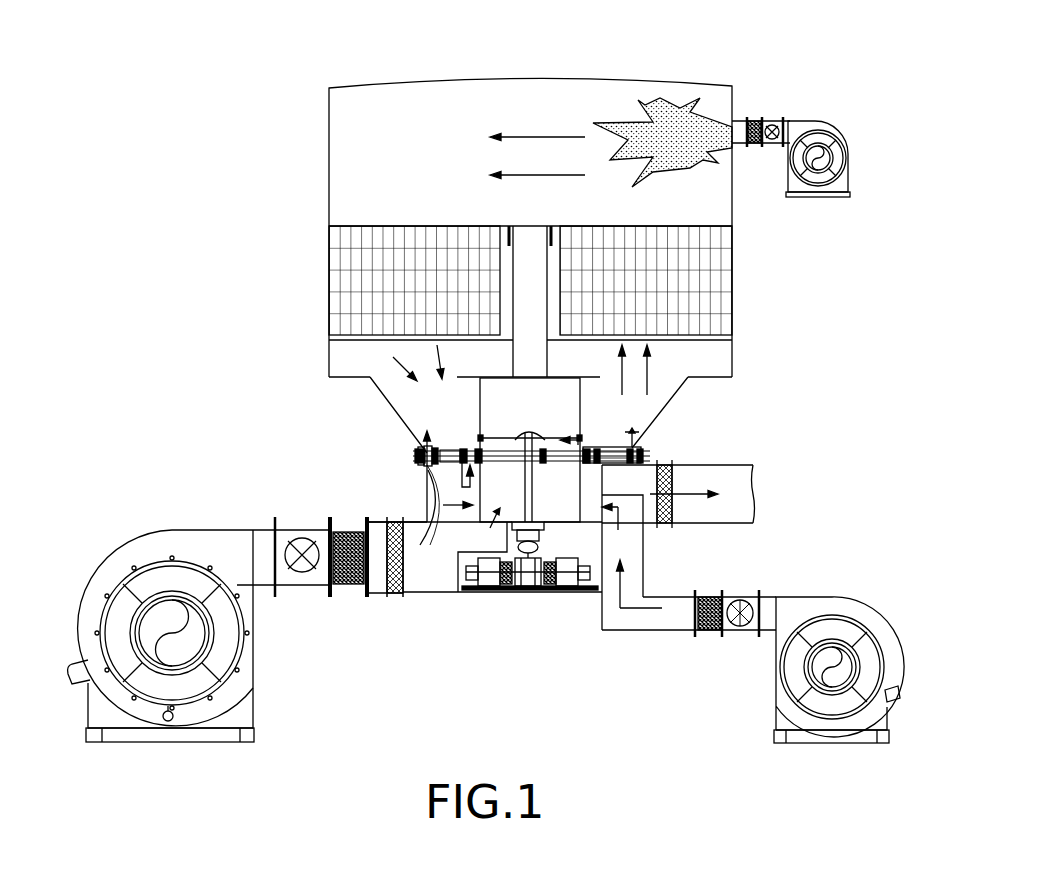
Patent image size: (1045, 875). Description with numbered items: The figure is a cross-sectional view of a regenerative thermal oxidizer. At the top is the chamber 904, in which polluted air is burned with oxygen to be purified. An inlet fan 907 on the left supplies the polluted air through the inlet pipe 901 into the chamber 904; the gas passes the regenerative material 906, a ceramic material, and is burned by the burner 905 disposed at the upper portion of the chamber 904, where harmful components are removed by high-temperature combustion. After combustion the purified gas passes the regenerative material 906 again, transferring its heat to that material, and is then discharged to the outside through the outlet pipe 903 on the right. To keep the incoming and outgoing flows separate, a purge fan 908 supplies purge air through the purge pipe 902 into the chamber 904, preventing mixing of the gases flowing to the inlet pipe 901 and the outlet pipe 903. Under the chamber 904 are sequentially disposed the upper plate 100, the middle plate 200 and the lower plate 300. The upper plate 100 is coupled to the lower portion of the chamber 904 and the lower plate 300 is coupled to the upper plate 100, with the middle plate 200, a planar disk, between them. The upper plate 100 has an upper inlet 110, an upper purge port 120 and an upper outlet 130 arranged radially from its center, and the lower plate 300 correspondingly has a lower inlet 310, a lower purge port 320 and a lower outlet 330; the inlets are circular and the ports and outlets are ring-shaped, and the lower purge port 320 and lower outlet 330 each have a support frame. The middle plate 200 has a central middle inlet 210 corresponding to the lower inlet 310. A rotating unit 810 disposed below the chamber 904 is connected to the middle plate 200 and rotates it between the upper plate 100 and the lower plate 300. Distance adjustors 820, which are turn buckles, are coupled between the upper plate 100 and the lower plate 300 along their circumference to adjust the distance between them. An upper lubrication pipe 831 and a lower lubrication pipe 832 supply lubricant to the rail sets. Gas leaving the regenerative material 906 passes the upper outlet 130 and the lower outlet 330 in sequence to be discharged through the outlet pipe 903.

The upper plate 100 is at (401, 443).
The upper inlet 110 is at (500, 447).
The upper purge port 120 is at (478, 455).
The upper outlet 130 is at (418, 445).
The middle plate 200 is at (403, 456).
The middle inlet 210 is at (558, 460).
The lower plate 300 is at (418, 470).
The lower inlet 310 is at (526, 572).
The lower purge port 320 is at (420, 466).
The lower outlet 330 is at (410, 540).
The rotating unit 810 is at (560, 580).
The distance adjustor 820 is at (640, 452).
The upper lubrication pipe 831 is at (618, 445).
The lower lubrication pipe 832 is at (668, 470).
The inlet pipe 901 is at (445, 540).
The purge pipe 902 is at (640, 617).
The outlet pipe 903 is at (703, 524).
The chamber 904 is at (592, 80).
The burner 905 is at (747, 122).
The regenerative material 906 is at (732, 261).
The inlet fan 907 is at (255, 705).
The purge fan 908 is at (838, 598).